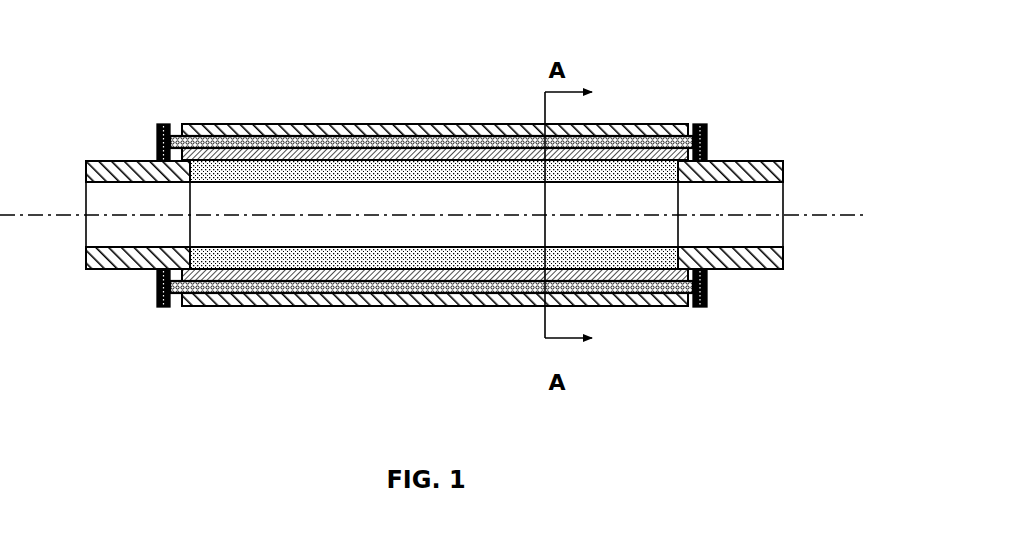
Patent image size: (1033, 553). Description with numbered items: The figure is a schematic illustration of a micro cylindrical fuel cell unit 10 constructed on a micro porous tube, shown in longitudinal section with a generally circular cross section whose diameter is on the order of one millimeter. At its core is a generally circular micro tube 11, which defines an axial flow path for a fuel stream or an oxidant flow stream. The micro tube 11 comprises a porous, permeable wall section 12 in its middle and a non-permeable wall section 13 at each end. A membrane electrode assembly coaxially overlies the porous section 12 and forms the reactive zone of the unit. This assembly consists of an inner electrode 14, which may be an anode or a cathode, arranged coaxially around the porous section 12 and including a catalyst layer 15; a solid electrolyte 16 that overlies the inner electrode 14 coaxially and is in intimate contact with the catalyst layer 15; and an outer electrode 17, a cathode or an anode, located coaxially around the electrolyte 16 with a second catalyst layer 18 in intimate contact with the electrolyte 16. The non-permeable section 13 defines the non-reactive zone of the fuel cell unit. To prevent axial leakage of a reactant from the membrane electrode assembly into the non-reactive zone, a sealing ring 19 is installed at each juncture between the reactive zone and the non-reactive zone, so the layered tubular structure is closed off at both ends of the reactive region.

The micro cylindrical fuel cell unit 10 is at (679, 70).
The micro tube 11 is at (165, 223).
The porous wall section 12 is at (392, 252).
The non-permeable wall section 13 is at (120, 161).
The inner electrode 14 is at (506, 273).
The catalyst layer 15 is at (607, 287).
The solid electrolyte 16 is at (331, 142).
The outer electrode 17 is at (355, 126).
The second catalyst layer 18 is at (491, 131).
The sealing ring 19 is at (168, 124).